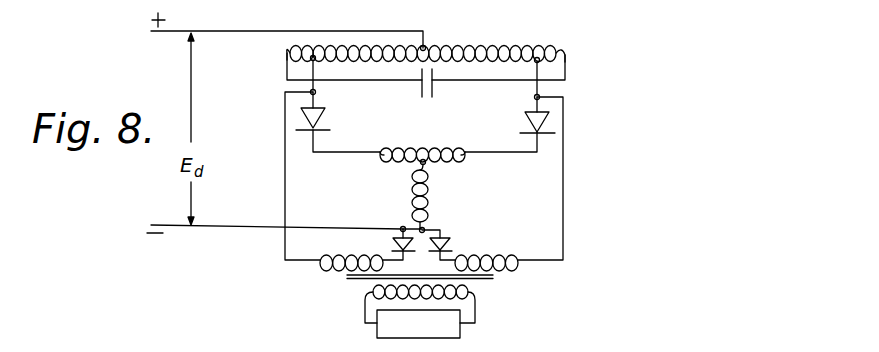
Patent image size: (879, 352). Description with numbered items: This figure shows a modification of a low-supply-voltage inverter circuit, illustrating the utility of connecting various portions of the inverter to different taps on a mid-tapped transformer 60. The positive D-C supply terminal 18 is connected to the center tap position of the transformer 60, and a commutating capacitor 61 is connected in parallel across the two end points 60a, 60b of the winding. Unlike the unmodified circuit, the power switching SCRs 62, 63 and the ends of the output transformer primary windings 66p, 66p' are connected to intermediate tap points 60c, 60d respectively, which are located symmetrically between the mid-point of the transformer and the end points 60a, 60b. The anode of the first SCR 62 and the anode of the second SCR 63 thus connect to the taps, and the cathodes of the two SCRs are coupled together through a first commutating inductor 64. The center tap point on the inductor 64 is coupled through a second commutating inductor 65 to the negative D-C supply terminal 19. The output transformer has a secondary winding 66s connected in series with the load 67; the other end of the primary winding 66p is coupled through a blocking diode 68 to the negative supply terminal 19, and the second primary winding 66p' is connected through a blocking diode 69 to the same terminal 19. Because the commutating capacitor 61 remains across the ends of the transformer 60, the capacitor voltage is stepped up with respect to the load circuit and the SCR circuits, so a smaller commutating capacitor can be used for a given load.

The positive D-C supply terminal 18 is at (191, 31).
The negative D-C supply terminal 19 is at (204, 229).
The mid-tapped transformer 60 is at (467, 45).
The one end of the transformer winding 60a is at (287, 53).
The other end of the transformer winding 60b is at (565, 55).
The intermediate tap point 60c is at (316, 62).
The intermediate tap point 60d is at (533, 64).
The commutating capacitor 61 is at (434, 81).
The first SCR 62 is at (322, 118).
The second SCR 63 is at (526, 119).
The first commutating inductor 64 is at (432, 141).
The second commutating inductor 65 is at (430, 193).
The primary winding of the output transformer 66p is at (341, 253).
The second output transformer primary winding 66p' is at (490, 248).
The secondary winding 66s is at (478, 292).
The load 67 is at (377, 326).
The blocking diode 68 is at (393, 243).
The blocking diode 69 is at (448, 243).